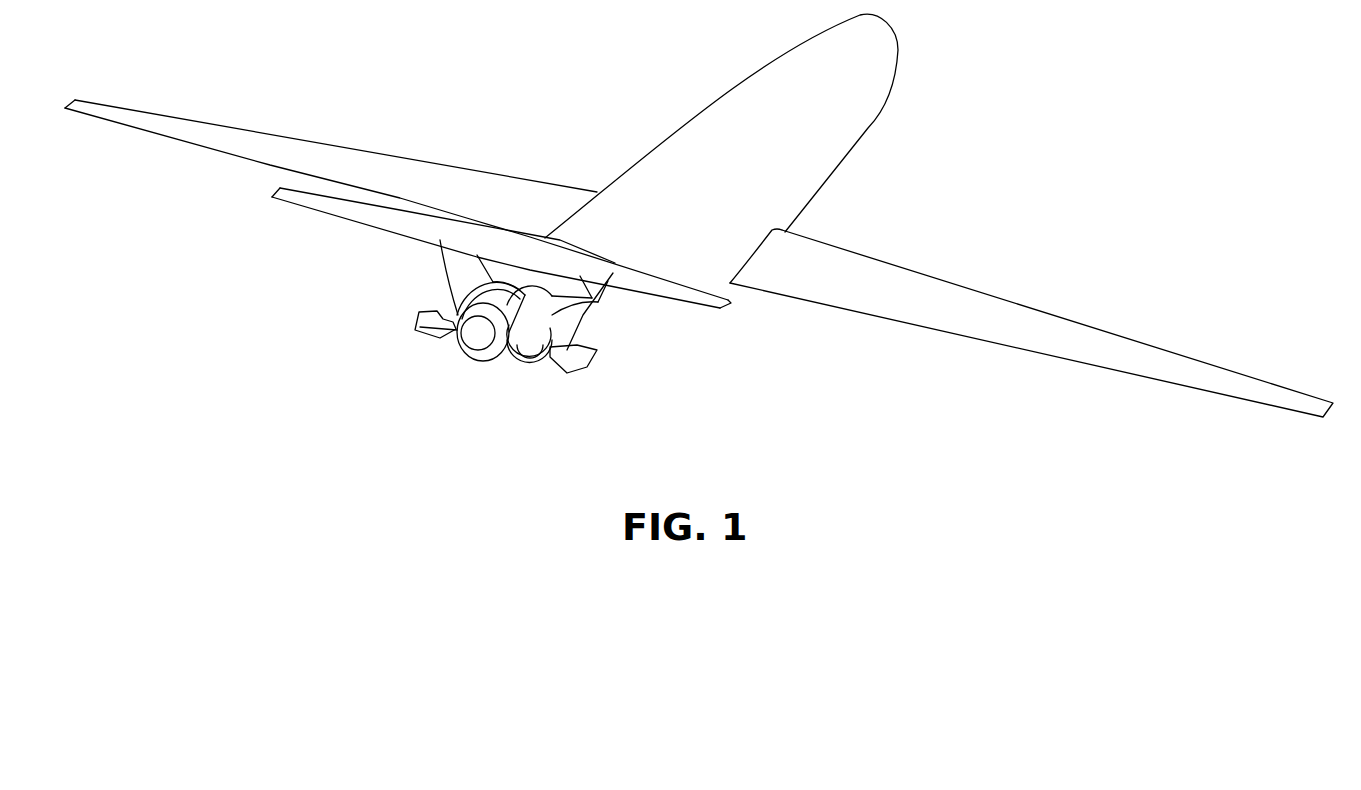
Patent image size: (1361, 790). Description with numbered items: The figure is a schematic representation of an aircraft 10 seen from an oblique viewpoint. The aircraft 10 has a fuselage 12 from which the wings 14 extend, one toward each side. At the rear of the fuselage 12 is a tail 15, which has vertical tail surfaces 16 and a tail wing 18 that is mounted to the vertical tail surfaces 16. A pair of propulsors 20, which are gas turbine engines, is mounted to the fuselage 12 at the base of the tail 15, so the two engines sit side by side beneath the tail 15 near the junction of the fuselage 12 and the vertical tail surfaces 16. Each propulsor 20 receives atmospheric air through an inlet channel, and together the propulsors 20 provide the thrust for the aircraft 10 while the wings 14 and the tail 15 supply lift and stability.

The aircraft 10 is at (700, 68).
The fuselage 12 is at (868, 128).
The wings 14 is at (937, 307).
The tail 15 is at (393, 263).
The vertical tail surfaces 16 is at (460, 285).
The tail wing 18 is at (432, 232).
The propulsors 20 is at (520, 292).